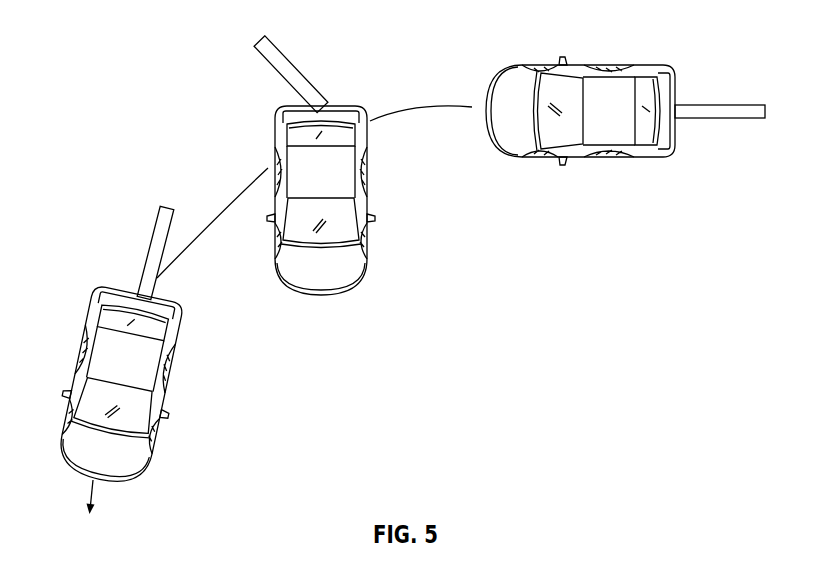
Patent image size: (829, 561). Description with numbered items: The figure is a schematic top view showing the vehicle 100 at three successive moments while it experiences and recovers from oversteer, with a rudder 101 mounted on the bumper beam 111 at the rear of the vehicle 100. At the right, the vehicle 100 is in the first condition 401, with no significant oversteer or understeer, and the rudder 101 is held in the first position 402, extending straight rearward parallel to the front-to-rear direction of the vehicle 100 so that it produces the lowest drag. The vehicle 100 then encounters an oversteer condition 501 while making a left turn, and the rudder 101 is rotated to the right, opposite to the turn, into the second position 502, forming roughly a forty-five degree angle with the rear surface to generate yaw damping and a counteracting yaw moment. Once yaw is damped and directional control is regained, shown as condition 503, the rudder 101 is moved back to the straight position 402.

The vehicle 100 is at (398, 258).
The rudder 101 is at (421, 158).
The bumper beam 111 is at (343, 107).
The first condition 401 is at (688, 52).
The first position 402 is at (155, 222).
The oversteer condition 501 is at (363, 57).
The second position 502 is at (255, 42).
The condition 503 is at (198, 258).